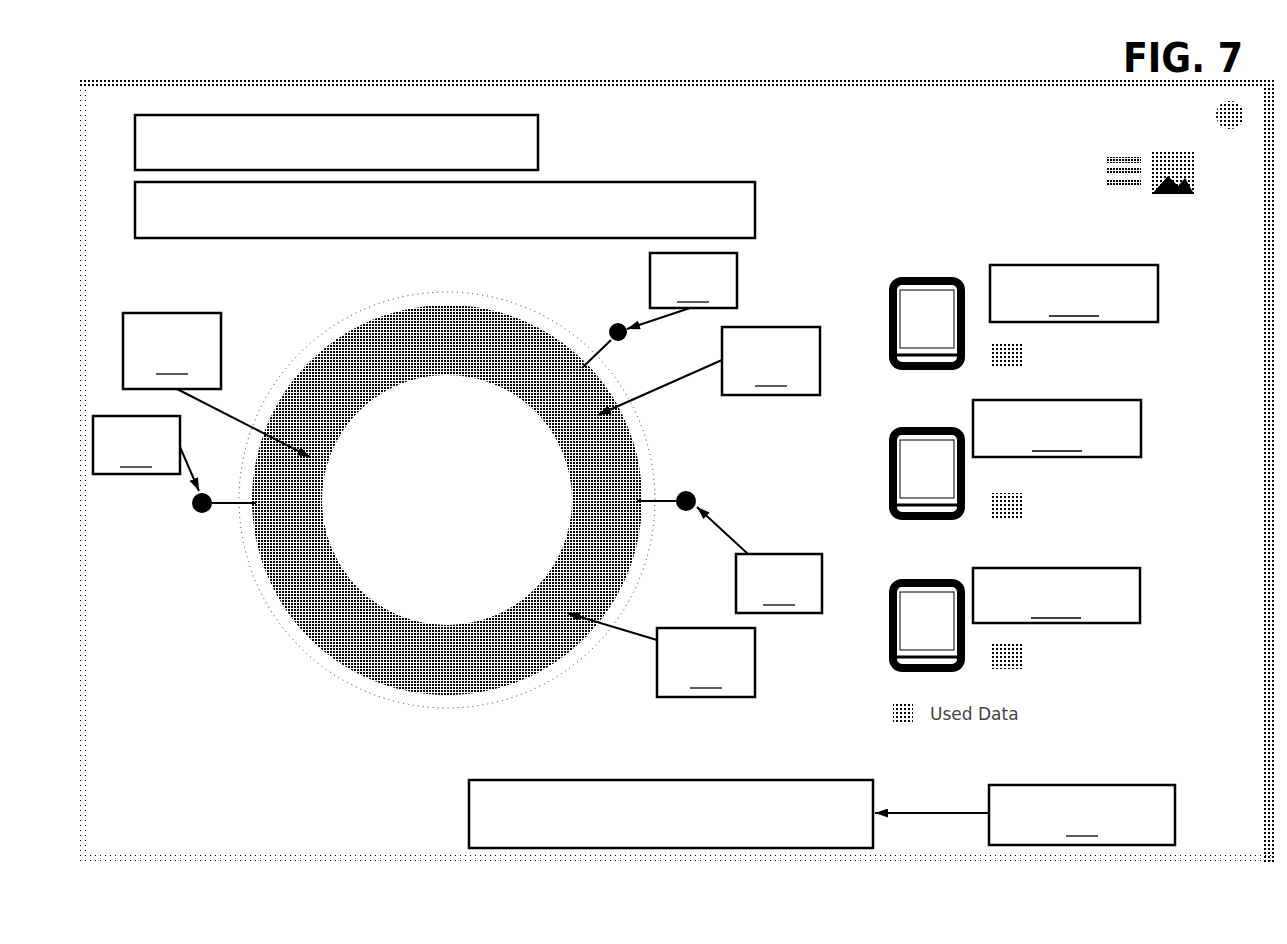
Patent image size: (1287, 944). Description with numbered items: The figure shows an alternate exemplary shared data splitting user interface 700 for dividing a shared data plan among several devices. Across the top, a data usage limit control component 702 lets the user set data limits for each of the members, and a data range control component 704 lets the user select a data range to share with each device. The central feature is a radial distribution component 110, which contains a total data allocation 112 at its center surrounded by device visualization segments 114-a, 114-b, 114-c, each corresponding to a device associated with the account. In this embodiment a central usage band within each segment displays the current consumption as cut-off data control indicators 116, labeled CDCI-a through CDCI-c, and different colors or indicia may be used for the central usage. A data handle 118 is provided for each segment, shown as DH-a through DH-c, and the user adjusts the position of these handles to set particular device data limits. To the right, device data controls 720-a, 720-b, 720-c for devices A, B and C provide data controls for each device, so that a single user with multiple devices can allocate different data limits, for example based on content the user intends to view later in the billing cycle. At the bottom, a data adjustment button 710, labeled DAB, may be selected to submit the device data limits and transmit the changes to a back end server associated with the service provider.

The shared data splitting user interface 700 is at (226, 52).
The data usage limit control component 702 is at (520, 115).
The data range control component 704 is at (712, 182).
The radial distribution component 110 is at (498, 479).
The total data allocation 112 is at (382, 552).
The device visualization segment 114-a is at (304, 552).
The device visualization segment 114-b is at (337, 358).
The device visualization segment 114-c is at (637, 480).
The cut-off data control indicator 116 is at (471, 505).
The data handle 118 is at (457, 433).
The data adjustment button 710 is at (822, 814).
The device data control 720-a is at (1043, 316).
The device data control 720-b is at (1043, 459).
The device data control 720-c is at (1043, 618).